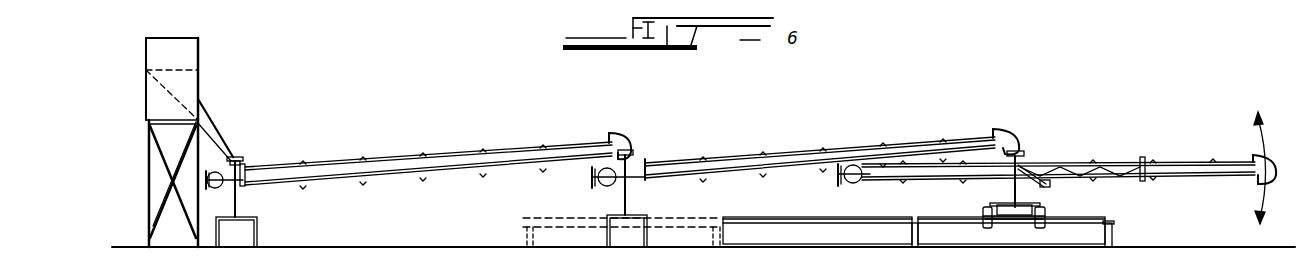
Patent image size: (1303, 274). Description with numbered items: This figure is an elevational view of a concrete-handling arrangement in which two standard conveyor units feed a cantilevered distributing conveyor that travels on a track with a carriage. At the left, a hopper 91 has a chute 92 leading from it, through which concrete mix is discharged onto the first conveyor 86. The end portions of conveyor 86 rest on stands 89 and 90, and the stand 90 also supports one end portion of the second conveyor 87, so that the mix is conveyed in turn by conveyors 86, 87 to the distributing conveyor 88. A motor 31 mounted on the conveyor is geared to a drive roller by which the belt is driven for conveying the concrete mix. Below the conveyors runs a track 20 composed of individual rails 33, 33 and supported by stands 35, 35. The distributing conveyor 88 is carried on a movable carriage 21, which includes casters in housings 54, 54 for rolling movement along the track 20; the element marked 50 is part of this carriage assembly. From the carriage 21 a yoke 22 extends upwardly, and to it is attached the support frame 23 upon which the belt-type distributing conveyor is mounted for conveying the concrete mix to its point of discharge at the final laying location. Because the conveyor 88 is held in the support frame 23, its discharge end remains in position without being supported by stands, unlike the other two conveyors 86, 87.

The track 20 is at (796, 206).
The carriage 21 is at (1012, 216).
The yoke 22 is at (1012, 184).
The support frame 23 is at (1118, 184).
The motor 31 is at (853, 184).
The rail 33 is at (835, 224).
The stand 35 is at (913, 232).
The wheel 50 is at (984, 218).
The housing 54 is at (1042, 222).
The conveyor 86 is at (428, 150).
The conveyor 87 is at (712, 158).
The distributing conveyor 88 is at (1126, 160).
The stand 89 is at (258, 222).
The stand 90 is at (642, 215).
The hopper 91 is at (198, 86).
The chute 92 is at (216, 129).